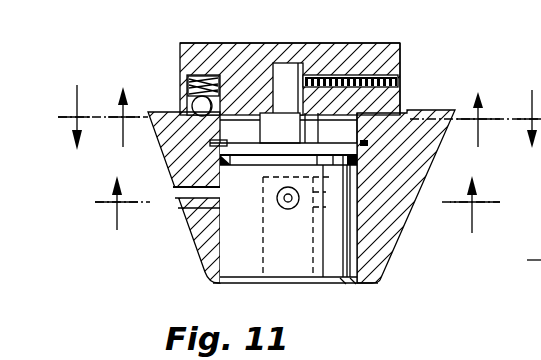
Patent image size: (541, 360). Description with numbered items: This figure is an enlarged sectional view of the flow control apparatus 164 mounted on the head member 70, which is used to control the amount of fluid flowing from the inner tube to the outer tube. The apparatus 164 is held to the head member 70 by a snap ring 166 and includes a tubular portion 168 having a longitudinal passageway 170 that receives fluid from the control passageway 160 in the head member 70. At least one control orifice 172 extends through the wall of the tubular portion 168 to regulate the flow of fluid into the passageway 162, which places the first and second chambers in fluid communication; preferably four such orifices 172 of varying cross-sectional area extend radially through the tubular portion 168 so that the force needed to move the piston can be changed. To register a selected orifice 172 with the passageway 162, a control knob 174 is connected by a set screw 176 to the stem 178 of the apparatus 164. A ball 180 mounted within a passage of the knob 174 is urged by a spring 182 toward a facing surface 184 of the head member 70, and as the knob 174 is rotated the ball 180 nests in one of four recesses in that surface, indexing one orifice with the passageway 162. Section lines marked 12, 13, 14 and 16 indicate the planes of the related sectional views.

The control apparatus 164 is at (379, 38).
The control knob 174 is at (305, 43).
The stem 178 is at (270, 62).
The set screw 176 is at (372, 76).
The facing surface 184 is at (400, 105).
The spring 182 is at (187, 78).
The ball 180 is at (190, 108).
The passageway 162 is at (177, 195).
The head member 70 is at (446, 92).
The longitudinal passageway 170 is at (264, 244).
The control orifice 172 is at (246, 198).
The tubular portion 168 is at (354, 263).
The snap ring 166 is at (364, 144).
The control passageway 160 is at (301, 284).
The section line 14- 14 is at (296, 117).
The section line 13- 13 is at (305, 117).
The section line 12- 12 is at (297, 204).
The section line 16- 16 is at (534, 244).